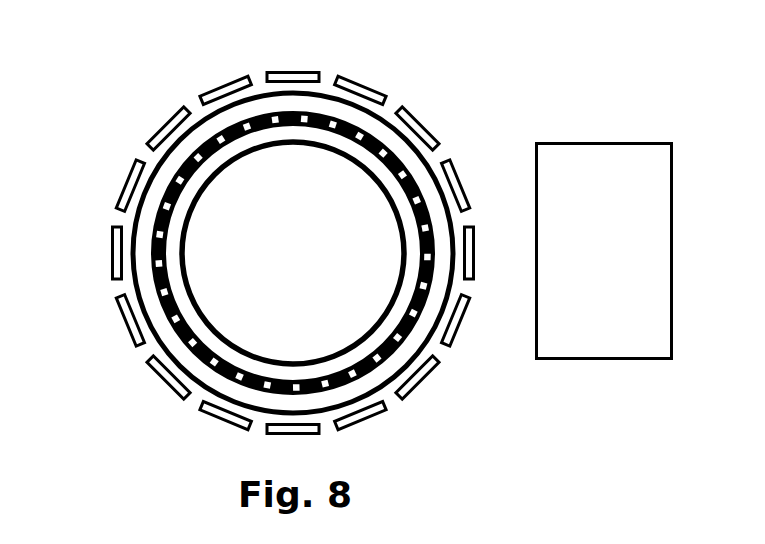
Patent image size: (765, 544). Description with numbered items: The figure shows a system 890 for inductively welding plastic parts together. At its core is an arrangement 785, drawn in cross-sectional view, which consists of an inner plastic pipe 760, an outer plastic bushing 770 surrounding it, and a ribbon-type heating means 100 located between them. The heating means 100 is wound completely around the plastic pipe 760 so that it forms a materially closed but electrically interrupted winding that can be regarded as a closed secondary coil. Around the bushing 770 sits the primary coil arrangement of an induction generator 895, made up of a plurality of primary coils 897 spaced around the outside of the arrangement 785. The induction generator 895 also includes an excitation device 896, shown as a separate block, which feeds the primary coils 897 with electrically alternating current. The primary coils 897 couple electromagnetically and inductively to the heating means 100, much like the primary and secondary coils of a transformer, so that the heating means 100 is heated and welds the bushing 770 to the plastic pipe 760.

The heating means 100 is at (363, 145).
The plastic pipe 760 is at (407, 247).
The bushing 770 is at (134, 217).
The arrangement 785 is at (263, 231).
The primary coils 897 is at (302, 70).
The system 890 is at (604, 186).
The excitation device 896 is at (604, 251).
The induction generator 895 is at (560, 382).